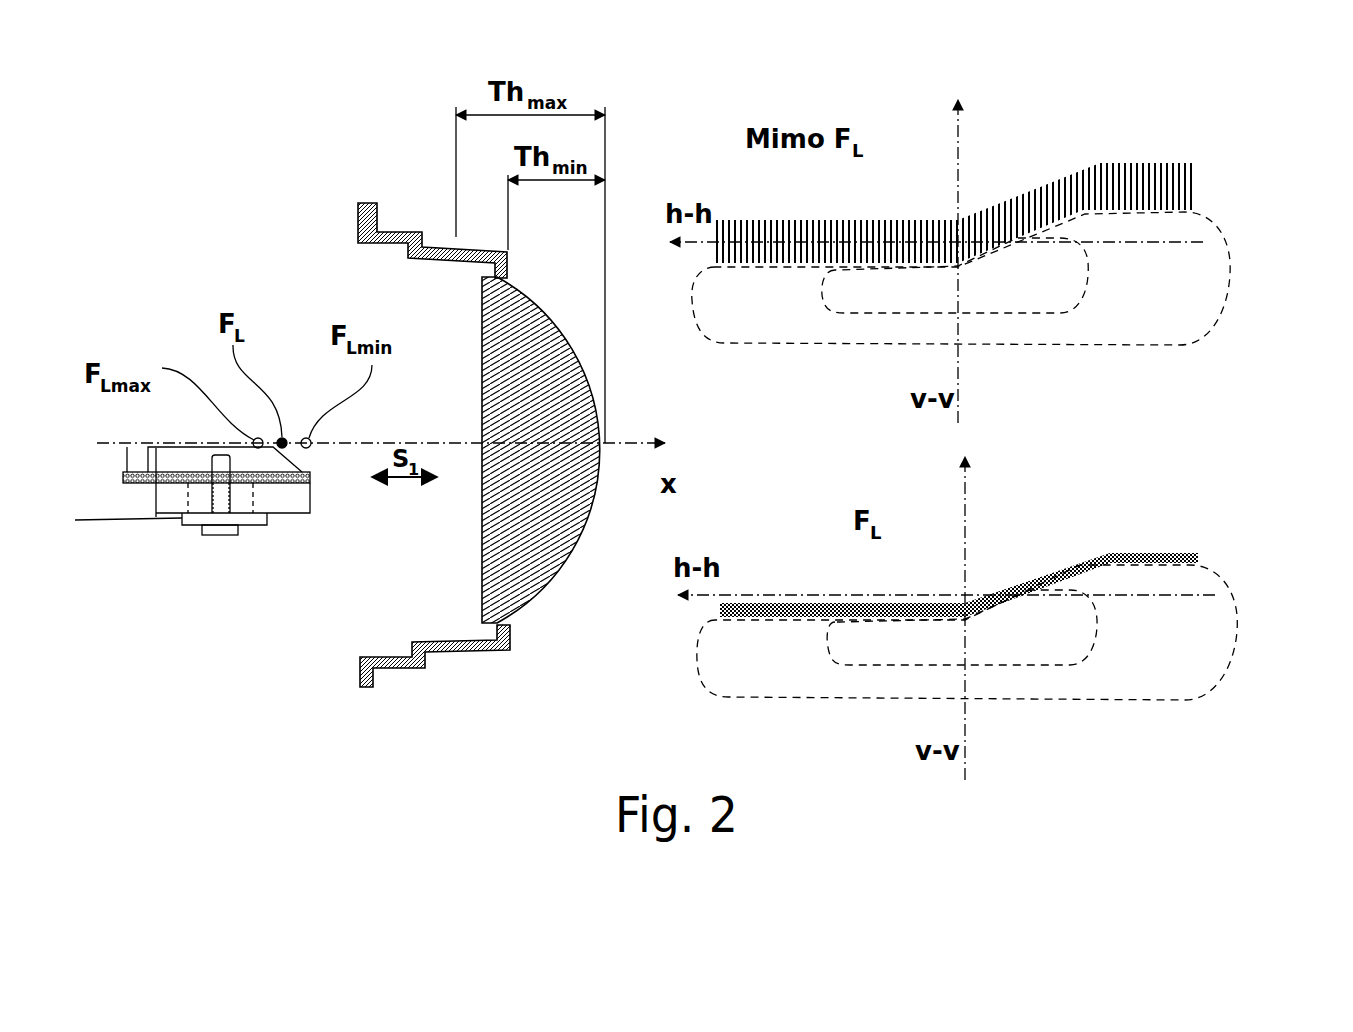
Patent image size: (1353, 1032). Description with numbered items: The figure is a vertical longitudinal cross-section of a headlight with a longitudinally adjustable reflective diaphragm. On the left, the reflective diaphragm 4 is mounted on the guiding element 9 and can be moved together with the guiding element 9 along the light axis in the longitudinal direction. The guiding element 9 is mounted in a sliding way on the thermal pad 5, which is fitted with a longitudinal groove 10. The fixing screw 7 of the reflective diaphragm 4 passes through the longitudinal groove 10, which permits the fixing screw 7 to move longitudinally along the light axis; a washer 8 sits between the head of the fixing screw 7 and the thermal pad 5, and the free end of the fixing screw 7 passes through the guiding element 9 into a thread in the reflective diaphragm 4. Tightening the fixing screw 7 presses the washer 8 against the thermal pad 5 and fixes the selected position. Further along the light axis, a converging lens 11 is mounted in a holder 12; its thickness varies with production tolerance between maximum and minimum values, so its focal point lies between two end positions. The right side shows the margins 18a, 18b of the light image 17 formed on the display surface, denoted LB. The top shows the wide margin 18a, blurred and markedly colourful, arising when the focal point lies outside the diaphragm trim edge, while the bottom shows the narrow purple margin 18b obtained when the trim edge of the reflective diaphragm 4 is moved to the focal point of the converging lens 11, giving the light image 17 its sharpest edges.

The reflective diaphragm 4 is at (160, 517).
The thermal pad 5 is at (93, 520).
The fixing screw 7 is at (218, 498).
The washer 8 is at (245, 517).
The guiding element 9 is at (308, 472).
The longitudinal groove 10 is at (197, 507).
The converging lens 11 is at (530, 602).
The holder 12 is at (457, 650).
The light image 17 is at (1170, 290).
The wide margin 18a is at (1165, 163).
The narrow margin 18b is at (1190, 553).
The light beam region LB is at (1163, 317).